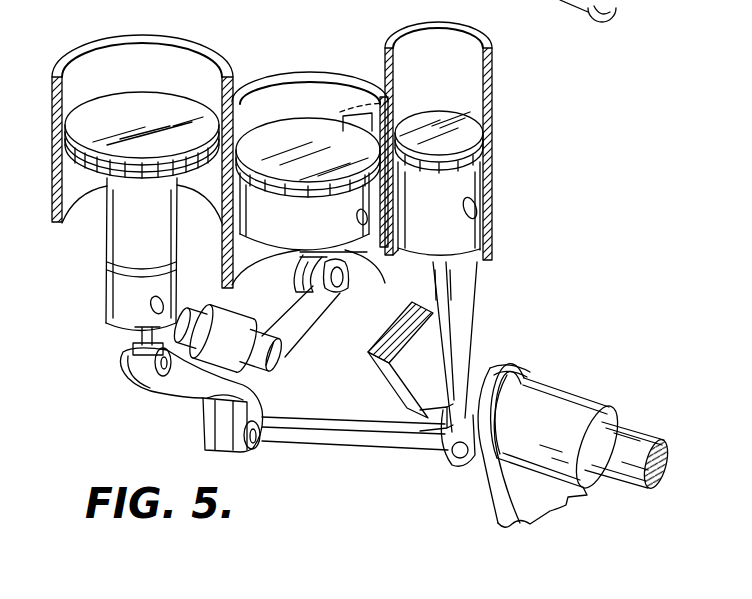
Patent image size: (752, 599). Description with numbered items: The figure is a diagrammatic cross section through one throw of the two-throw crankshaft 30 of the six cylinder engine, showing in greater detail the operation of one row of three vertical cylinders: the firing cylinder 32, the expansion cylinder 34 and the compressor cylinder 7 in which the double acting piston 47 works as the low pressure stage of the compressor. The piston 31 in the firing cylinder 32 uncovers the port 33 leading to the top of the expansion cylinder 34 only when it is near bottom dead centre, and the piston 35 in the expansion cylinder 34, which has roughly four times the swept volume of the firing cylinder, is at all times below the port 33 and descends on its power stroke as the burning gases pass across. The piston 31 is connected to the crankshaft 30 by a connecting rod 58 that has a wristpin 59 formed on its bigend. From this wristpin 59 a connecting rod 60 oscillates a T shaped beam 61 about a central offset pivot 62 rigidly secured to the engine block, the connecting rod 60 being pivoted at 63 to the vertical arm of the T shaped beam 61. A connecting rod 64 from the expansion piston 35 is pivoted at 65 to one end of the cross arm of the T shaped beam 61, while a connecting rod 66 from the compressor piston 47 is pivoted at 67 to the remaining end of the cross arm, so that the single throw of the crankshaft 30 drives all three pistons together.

The cylinder 7 is at (146, 37).
The two-throw crankshaft 30 is at (581, 406).
The piston 31 is at (472, 183).
The firing cylinder 32 is at (478, 95).
The port 33 is at (358, 116).
The expansion cylinder 34 is at (270, 78).
The piston 35 is at (300, 237).
The double acting piston 47 is at (102, 148).
The connecting rod 58 is at (462, 320).
The wristpin 59 is at (452, 474).
The connecting rod 60 is at (330, 437).
The T shaped beam 61 is at (260, 385).
The central offset pivot 62 is at (278, 355).
The pivot 63 is at (263, 440).
The connecting rod 64 is at (340, 252).
The pivot 65 is at (340, 290).
The connecting rod 66 is at (133, 341).
The pivot 67 is at (165, 390).